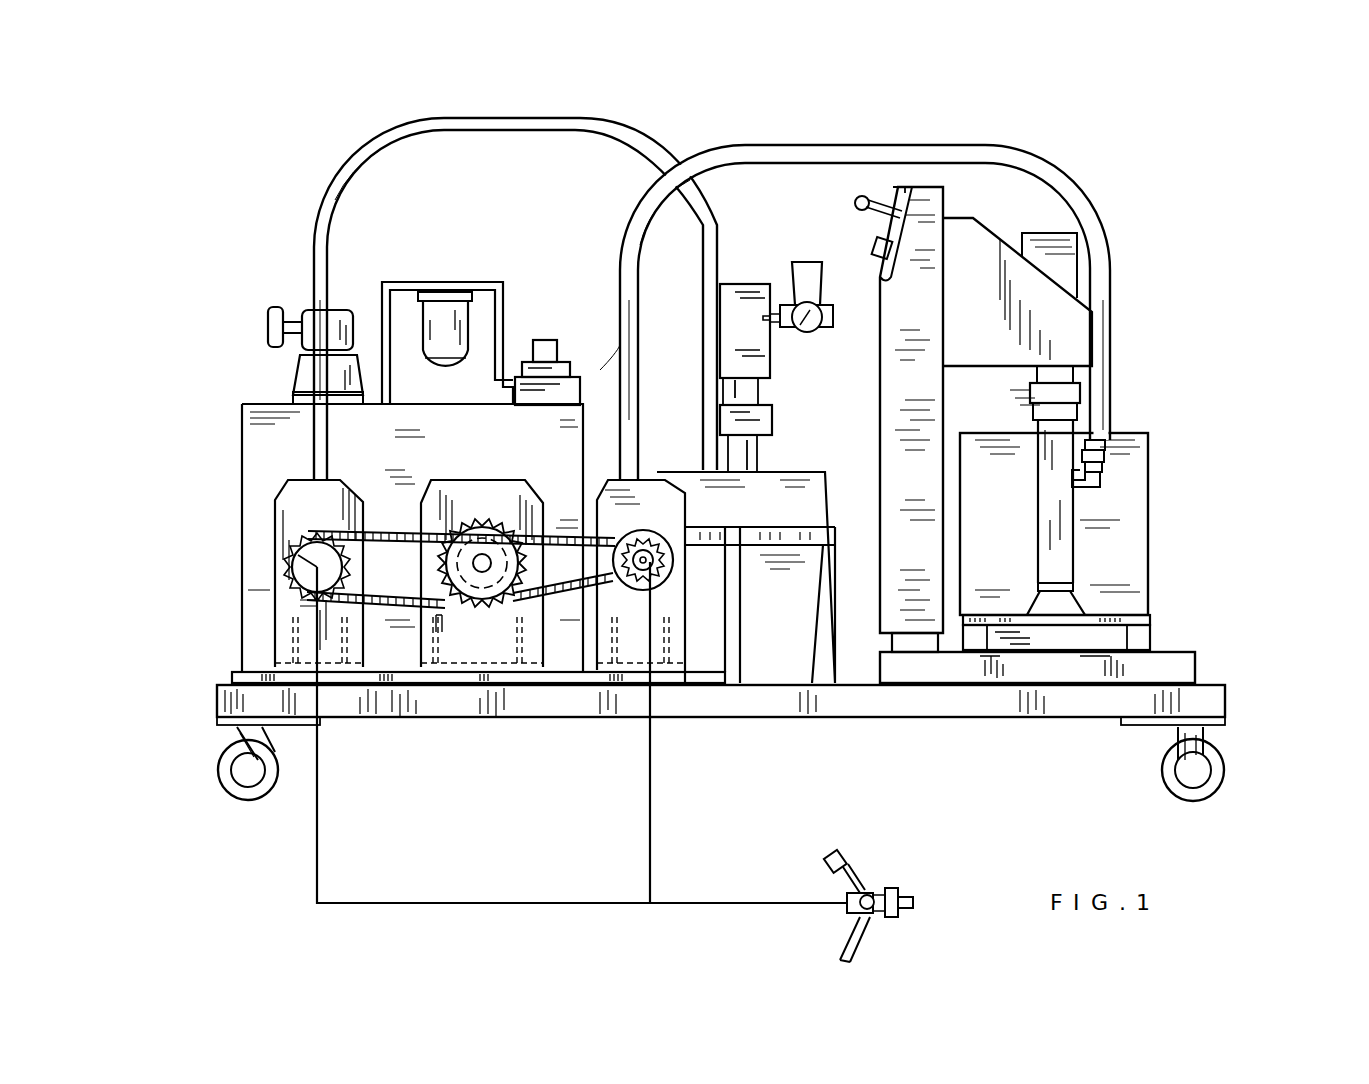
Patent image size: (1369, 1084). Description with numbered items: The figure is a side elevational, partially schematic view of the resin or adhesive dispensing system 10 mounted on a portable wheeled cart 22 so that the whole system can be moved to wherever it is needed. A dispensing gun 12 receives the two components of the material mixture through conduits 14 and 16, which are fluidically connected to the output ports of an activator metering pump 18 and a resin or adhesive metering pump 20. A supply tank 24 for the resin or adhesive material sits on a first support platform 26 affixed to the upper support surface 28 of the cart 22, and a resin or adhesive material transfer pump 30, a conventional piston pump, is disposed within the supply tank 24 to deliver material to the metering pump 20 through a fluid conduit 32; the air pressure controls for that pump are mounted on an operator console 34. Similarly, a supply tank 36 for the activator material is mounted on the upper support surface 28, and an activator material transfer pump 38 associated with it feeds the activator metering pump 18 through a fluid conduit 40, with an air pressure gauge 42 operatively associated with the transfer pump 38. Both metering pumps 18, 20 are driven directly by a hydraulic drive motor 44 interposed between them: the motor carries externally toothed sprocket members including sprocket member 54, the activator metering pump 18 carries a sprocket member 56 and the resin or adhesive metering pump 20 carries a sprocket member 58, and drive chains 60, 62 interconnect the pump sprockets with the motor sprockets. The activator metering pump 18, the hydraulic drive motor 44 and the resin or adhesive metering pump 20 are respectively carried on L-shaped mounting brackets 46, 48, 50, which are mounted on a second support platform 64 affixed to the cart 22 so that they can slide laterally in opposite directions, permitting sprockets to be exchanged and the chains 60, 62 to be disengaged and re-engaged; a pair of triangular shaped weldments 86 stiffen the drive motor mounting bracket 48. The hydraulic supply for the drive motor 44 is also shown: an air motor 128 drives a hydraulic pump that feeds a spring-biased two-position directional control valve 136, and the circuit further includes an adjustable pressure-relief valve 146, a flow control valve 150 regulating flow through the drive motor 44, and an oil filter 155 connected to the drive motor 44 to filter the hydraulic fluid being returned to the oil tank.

The resin or adhesive dispensing system 10 is at (1173, 315).
The dispensing gun 12 is at (907, 890).
The conduit 14 is at (323, 835).
The conduit 16 is at (653, 805).
The activator metering pump 18 is at (297, 553).
The resin or adhesive metering pump 20 is at (673, 583).
The portable wheeled cart 22 is at (1230, 712).
The supply tank 24 is at (1150, 527).
The first support platform 26 is at (1177, 663).
The upper support surface 28 is at (1220, 680).
The resin or adhesive material transfer pump 30 is at (1113, 600).
The fluid conduit 32 is at (1030, 162).
The operator console 34 is at (905, 330).
The supply tank 36 is at (813, 472).
The activator material transfer pump 38 is at (737, 290).
The fluid conduit 40 is at (630, 130).
The air pressure gauge 42 is at (833, 290).
The hydraulic drive motor 44 is at (482, 557).
The mounting bracket 46 is at (285, 507).
The mounting bracket 48 is at (453, 492).
The mounting bracket 50 is at (672, 472).
The sprocket member 54 is at (517, 600).
The sprocket member 56 is at (297, 593).
The sprocket member 58 is at (668, 527).
The drive chain 60 is at (382, 528).
The drive chain 62 is at (560, 530).
The second support platform 64 is at (232, 670).
The triangular shaped weldment 86 is at (440, 647).
The air motor 128 is at (338, 327).
The two-position directional control valve 136 is at (537, 338).
The adjustable pressure-relief valve 146 is at (600, 370).
The flow control valve 150 is at (562, 357).
The oil filter 155 is at (442, 327).